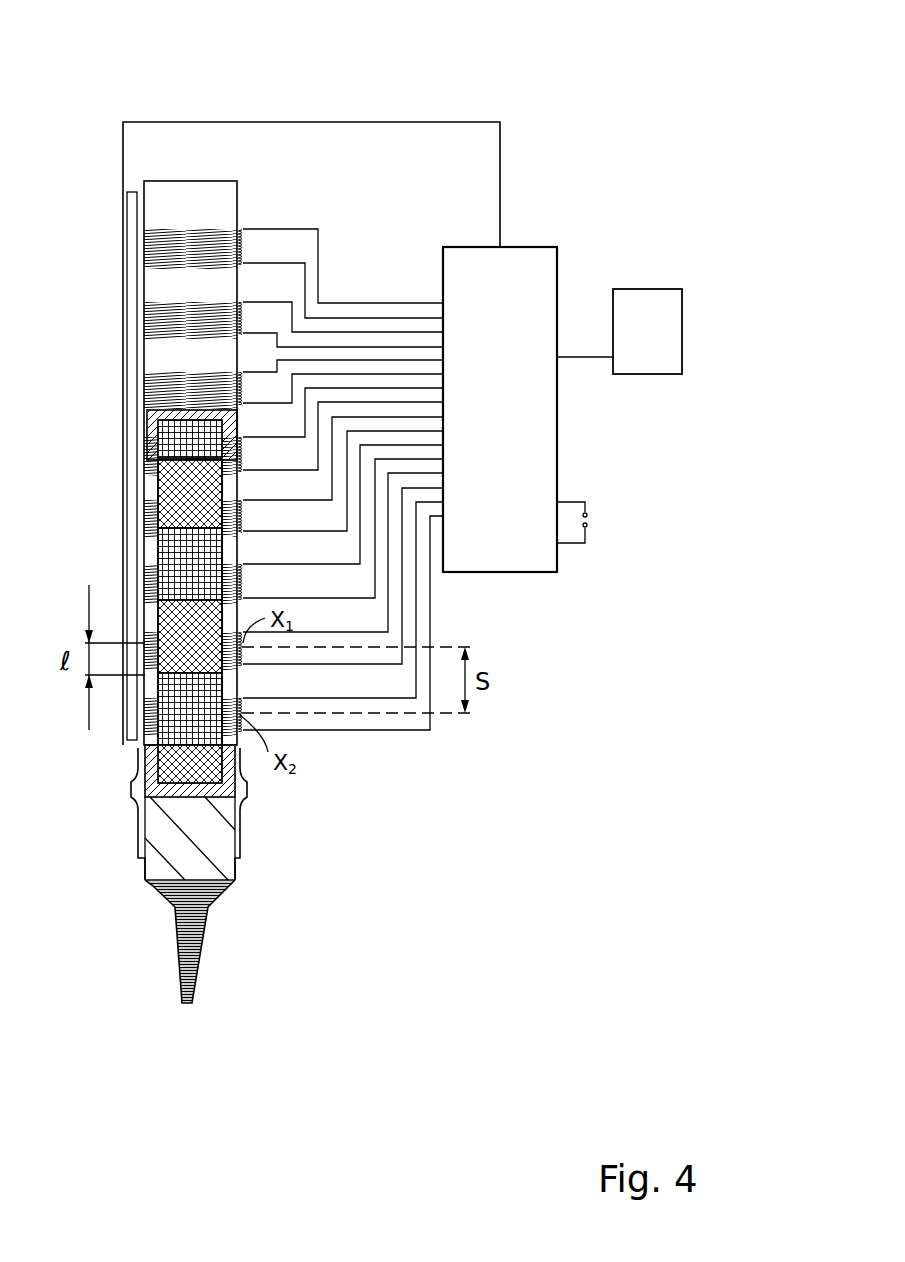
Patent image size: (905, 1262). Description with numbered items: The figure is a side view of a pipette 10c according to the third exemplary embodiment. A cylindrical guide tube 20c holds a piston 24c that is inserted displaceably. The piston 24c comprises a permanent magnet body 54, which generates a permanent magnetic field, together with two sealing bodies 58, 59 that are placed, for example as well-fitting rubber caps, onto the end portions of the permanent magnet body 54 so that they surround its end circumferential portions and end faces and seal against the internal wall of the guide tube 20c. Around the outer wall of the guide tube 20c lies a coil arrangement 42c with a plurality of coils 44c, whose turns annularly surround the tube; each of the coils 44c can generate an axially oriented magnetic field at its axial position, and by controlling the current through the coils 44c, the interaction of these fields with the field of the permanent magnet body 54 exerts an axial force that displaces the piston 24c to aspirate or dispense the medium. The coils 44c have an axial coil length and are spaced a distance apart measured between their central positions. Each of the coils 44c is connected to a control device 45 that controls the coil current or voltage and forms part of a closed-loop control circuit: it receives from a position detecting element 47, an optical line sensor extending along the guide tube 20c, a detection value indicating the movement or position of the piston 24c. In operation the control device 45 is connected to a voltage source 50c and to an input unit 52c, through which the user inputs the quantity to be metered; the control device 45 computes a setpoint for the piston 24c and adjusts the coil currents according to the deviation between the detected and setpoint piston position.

The pipette 10c is at (522, 81).
The cylindrical guide tube 20c is at (152, 181).
The coil arrangement 42c is at (252, 216).
The coils 44c is at (168, 245).
The position detecting element 47 is at (131, 322).
The sealing body 59 is at (150, 428).
The permanent magnet body 54 is at (226, 682).
The sealing body 58 is at (221, 800).
The piston 24c is at (204, 809).
The control device 45 is at (500, 409).
The input unit 52c is at (619, 331).
The voltage source 50c is at (590, 527).